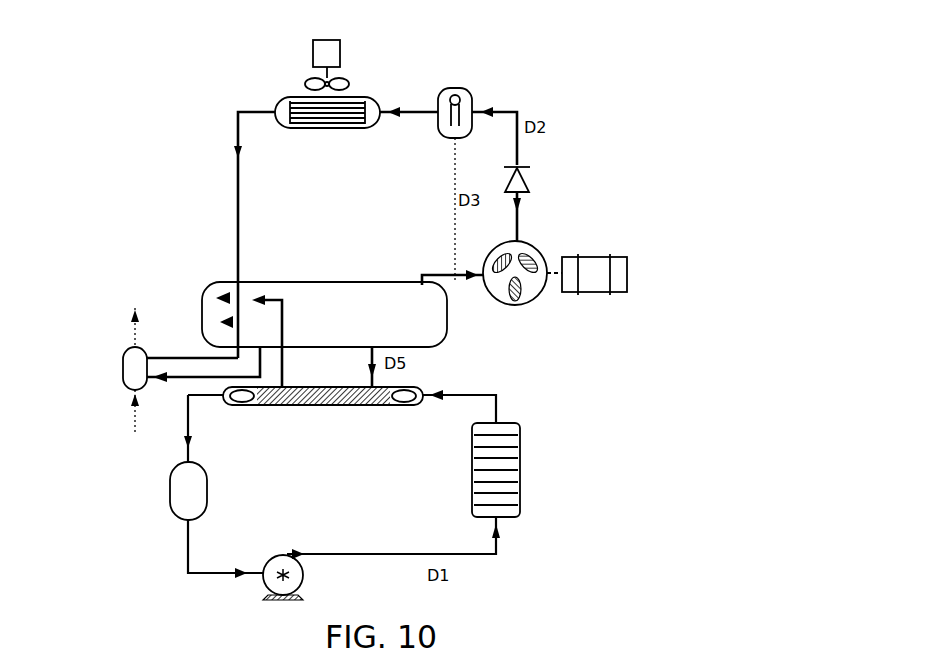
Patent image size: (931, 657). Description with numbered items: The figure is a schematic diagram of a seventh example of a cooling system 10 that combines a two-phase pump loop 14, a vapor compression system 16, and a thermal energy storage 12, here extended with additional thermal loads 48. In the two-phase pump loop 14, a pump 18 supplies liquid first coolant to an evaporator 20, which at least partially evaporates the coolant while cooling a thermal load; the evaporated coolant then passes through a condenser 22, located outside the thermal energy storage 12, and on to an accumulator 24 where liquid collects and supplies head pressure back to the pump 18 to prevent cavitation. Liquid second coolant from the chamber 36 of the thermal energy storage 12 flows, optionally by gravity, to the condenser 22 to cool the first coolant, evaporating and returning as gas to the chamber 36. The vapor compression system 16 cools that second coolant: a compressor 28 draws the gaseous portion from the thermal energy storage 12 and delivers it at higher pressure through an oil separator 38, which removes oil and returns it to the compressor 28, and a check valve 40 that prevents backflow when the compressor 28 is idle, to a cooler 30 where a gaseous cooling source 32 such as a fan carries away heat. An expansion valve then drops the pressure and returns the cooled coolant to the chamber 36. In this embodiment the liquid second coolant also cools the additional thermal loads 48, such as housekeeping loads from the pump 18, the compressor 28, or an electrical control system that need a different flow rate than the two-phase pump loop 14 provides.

The cooling system 10 is at (107, 92).
The thermal energy storage 12 is at (202, 298).
The two-phase pump loop 14 is at (170, 572).
The vapor compression system 16 is at (214, 95).
The pump 18 is at (305, 577).
The evaporator 20 is at (515, 512).
The condenser 22 is at (240, 404).
The accumulator 24 is at (170, 490).
The compressor 28 is at (530, 300).
The cooler 30 is at (360, 97).
The gaseous cooling source 32 is at (338, 43).
The chamber 36 is at (330, 315).
The oil separator 38 is at (467, 92).
The check valve 40 is at (522, 186).
The additional thermal loads 48 is at (123, 350).